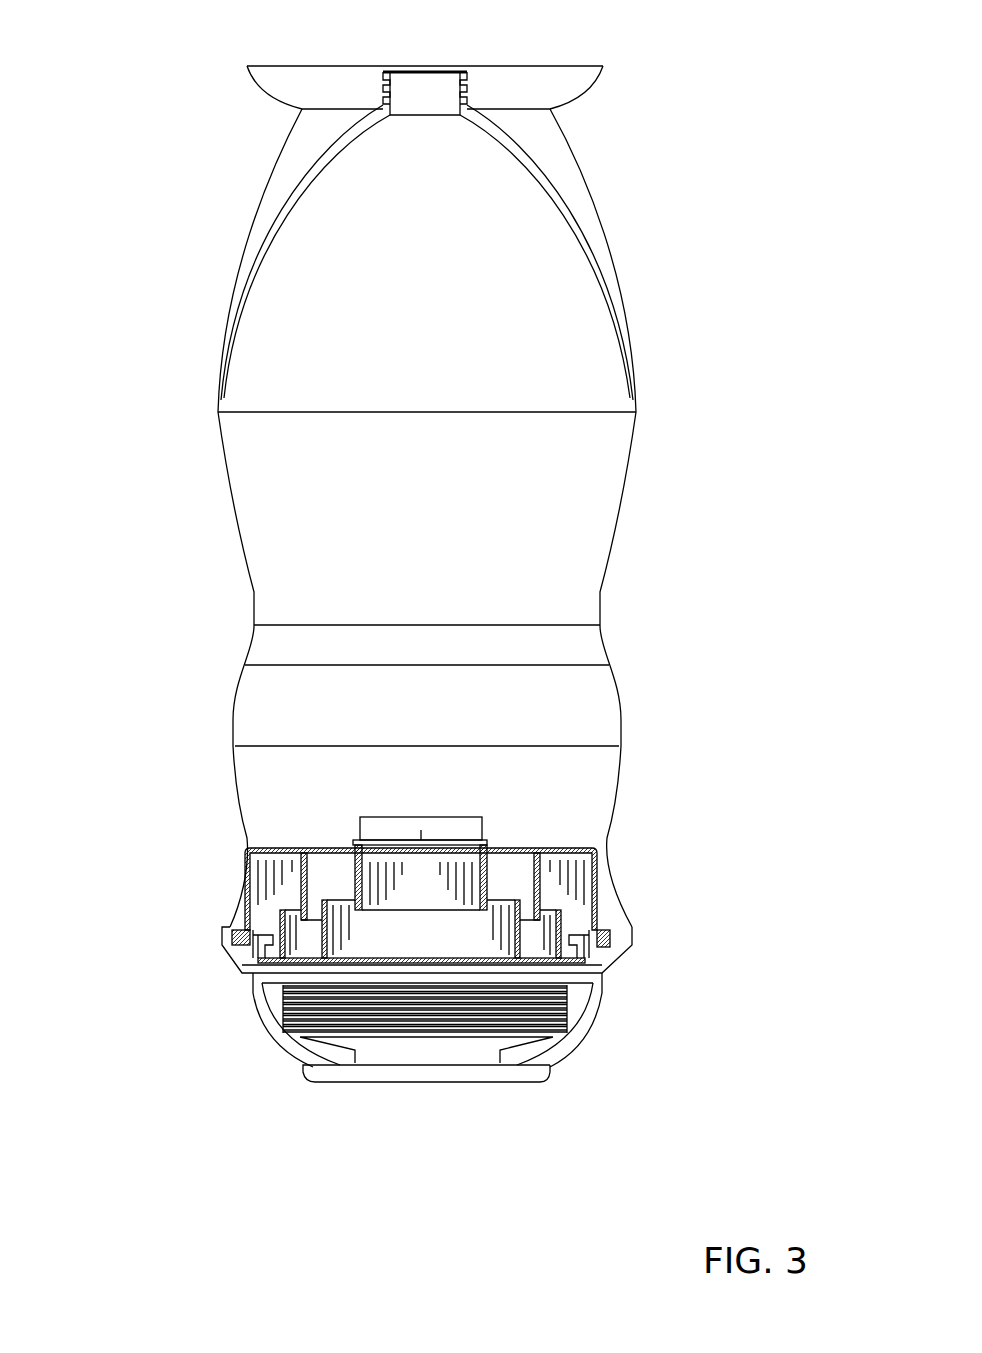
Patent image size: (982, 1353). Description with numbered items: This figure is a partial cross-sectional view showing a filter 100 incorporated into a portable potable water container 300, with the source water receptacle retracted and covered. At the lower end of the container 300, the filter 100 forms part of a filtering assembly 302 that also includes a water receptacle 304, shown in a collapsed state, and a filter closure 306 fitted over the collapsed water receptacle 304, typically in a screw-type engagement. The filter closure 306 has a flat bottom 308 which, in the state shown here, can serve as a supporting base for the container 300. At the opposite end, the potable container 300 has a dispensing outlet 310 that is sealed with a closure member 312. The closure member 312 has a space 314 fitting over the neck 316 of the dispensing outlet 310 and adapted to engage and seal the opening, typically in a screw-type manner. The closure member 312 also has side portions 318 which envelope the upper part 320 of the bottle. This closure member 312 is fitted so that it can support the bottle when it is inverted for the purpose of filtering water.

The filter 100 is at (570, 840).
The portable potable water container 300 is at (637, 345).
The filtering assembly 302 is at (208, 949).
The water receptacle 304 is at (560, 1010).
The filter closure 306 is at (550, 1070).
The flat bottom 308 is at (475, 1083).
The dispensing outlet 310 is at (428, 94).
The closure member 312 is at (583, 185).
The space 314 is at (470, 85).
The neck 316 is at (385, 79).
The side portions 318 is at (245, 267).
The upper part 320 is at (452, 276).